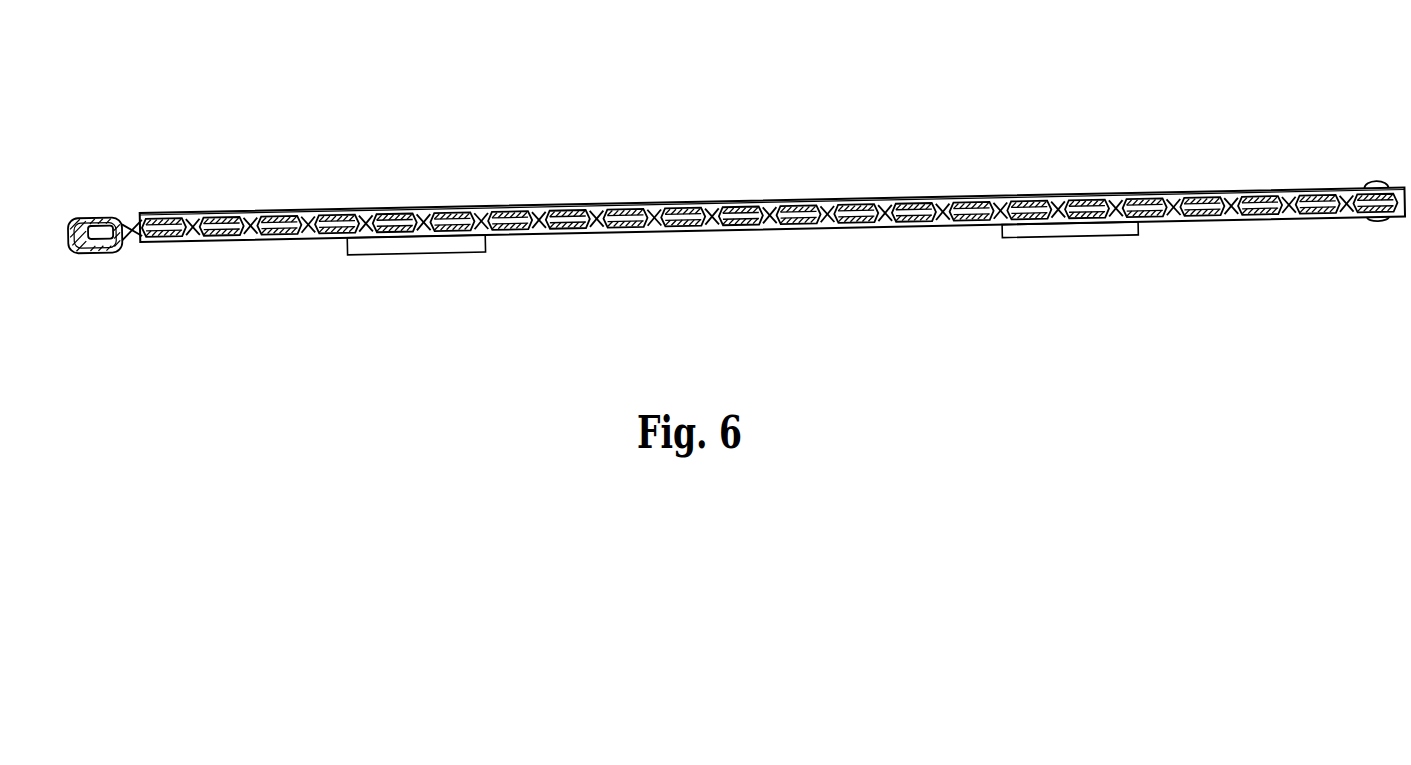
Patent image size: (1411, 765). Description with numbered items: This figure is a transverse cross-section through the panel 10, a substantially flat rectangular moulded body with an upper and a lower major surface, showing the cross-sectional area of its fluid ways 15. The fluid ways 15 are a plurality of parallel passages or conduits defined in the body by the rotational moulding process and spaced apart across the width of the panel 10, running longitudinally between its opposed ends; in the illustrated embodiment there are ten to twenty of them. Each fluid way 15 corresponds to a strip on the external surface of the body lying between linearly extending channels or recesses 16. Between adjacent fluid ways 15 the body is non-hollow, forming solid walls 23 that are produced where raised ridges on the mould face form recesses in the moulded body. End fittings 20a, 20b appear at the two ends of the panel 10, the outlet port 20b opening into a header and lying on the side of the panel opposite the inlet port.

The panel 10 is at (910, 160).
The fluid ways 15 is at (488, 210).
The channels or recesses 16 is at (542, 215).
The walls 23 is at (717, 204).
The left end connector ring 20a is at (93, 215).
The outlet port 20b is at (1377, 183).